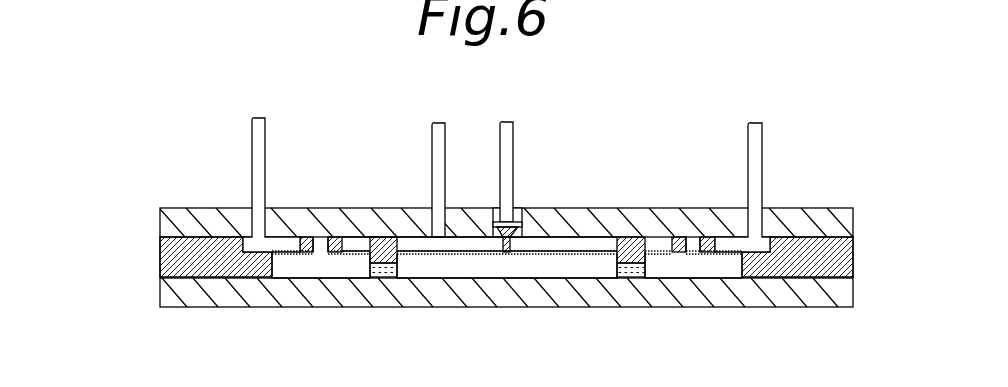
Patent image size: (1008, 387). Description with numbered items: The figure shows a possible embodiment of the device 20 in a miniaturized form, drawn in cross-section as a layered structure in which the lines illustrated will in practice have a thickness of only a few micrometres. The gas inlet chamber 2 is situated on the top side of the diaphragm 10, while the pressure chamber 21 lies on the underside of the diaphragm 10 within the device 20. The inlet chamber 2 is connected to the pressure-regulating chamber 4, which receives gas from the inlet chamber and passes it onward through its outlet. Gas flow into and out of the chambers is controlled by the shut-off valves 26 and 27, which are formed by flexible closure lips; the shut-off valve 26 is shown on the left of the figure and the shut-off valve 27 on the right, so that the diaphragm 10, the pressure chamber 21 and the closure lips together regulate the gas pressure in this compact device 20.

The device 20 is at (185, 200).
The gas inlet chamber 2 is at (505, 190).
The pressure-regulating chamber 4 is at (570, 247).
The diaphragm 10 is at (548, 253).
The pressure chamber 21 is at (440, 263).
The shut-off valve 26 is at (321, 252).
The shut-off valve 27 is at (694, 253).